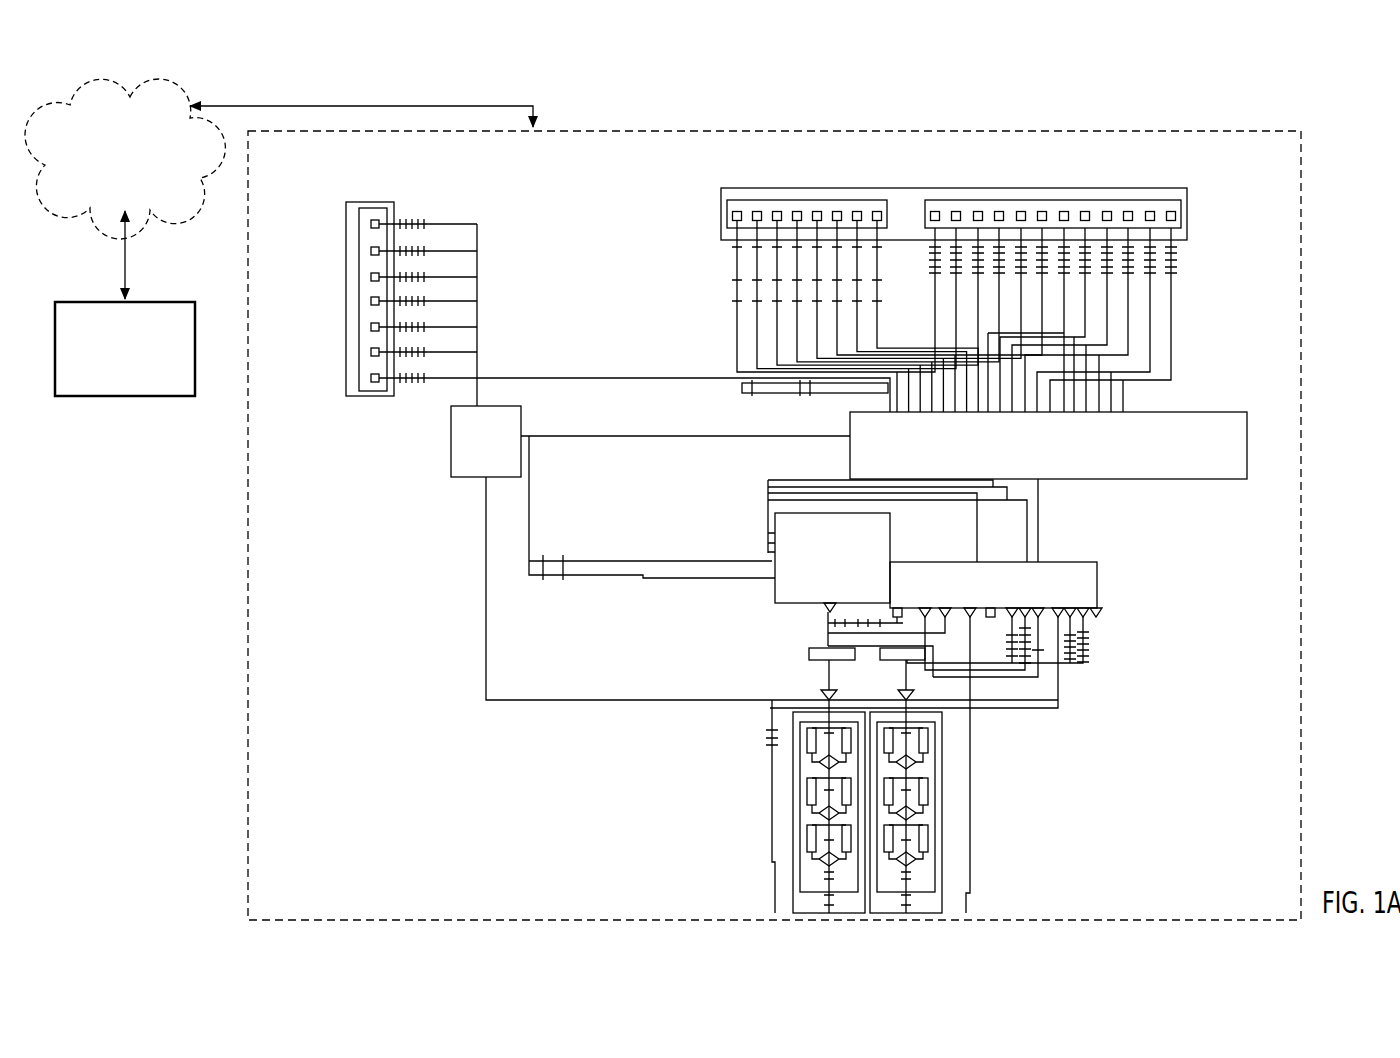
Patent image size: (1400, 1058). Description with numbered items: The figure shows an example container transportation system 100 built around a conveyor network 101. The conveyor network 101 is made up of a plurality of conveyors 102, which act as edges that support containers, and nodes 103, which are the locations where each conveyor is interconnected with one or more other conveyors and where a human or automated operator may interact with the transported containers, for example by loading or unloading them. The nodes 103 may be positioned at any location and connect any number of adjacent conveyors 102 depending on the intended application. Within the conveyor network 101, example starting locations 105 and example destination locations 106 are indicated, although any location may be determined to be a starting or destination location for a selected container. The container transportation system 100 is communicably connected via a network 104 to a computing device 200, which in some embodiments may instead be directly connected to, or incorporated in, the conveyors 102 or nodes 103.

The container transportation system 100 is at (1181, 84).
The conveyor network 101 is at (1228, 172).
The conveyors 102 is at (1001, 315).
The nodes 103 is at (848, 452).
The network 104 is at (100, 74).
The starting locations 105 is at (880, 659).
The destination locations 106 is at (786, 206).
The computing device 200 is at (95, 290).